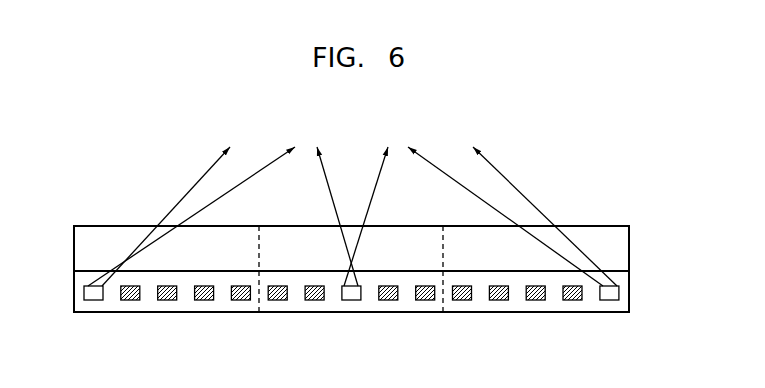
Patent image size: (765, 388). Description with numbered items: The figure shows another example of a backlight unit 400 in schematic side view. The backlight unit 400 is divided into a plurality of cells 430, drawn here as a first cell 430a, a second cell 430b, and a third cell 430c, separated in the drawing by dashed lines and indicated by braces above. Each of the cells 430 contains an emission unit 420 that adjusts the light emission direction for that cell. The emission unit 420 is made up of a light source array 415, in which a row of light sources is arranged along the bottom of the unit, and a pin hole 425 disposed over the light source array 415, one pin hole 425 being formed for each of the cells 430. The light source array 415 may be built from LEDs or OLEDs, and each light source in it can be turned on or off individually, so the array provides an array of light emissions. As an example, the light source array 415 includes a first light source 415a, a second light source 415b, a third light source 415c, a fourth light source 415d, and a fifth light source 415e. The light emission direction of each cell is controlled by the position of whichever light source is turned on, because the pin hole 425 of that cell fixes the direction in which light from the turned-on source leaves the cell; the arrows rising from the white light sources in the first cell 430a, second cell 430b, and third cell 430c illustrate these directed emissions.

The backlight unit 400 is at (608, 210).
The light source array 415 is at (610, 302).
The first light source 415a is at (93, 302).
The second light source 415b is at (129, 302).
The third light source 415c is at (166, 302).
The fourth light source 415d is at (203, 302).
The fifth light source 415e is at (242, 302).
The emission unit 420 is at (629, 250).
The pin hole 425 is at (540, 226).
The cells 430 is at (483, 305).
The first cell 430a is at (258, 133).
The second cell 430b is at (443, 133).
The third cell 430c is at (627, 133).